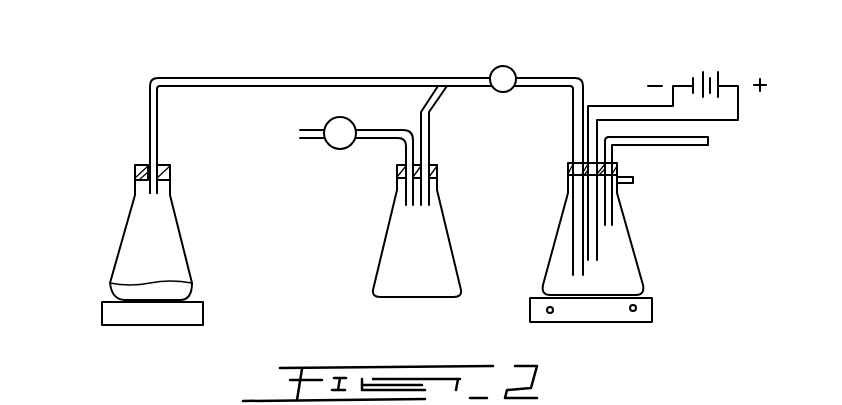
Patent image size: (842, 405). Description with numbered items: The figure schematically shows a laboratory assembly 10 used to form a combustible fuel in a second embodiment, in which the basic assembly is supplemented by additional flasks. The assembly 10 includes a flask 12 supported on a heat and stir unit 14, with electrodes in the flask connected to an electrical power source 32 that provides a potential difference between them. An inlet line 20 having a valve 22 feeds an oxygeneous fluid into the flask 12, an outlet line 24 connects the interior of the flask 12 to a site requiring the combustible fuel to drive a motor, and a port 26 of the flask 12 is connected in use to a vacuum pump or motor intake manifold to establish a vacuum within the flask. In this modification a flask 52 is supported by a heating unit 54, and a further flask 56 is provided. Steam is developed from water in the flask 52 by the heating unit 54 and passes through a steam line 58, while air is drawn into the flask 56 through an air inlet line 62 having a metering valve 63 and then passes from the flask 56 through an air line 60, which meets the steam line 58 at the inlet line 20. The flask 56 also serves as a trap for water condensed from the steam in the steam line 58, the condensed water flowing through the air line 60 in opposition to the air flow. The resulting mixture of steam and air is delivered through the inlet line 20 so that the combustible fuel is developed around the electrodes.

The laboratory assembly 10 is at (667, 270).
The flask 12 is at (543, 263).
The heat and stir unit 14 is at (652, 305).
The inlet line 20 is at (408, 78).
The valve 22 is at (505, 66).
The outlet line 24 is at (663, 145).
The port 26 is at (630, 183).
The electrical power source 32 is at (722, 72).
The flask 52 is at (180, 239).
The heating unit 54 is at (203, 313).
The flask 56 is at (382, 253).
The steam line 58 is at (152, 127).
The air line 60 is at (428, 138).
The air inlet line 62 is at (313, 127).
The metering valve 63 is at (345, 117).